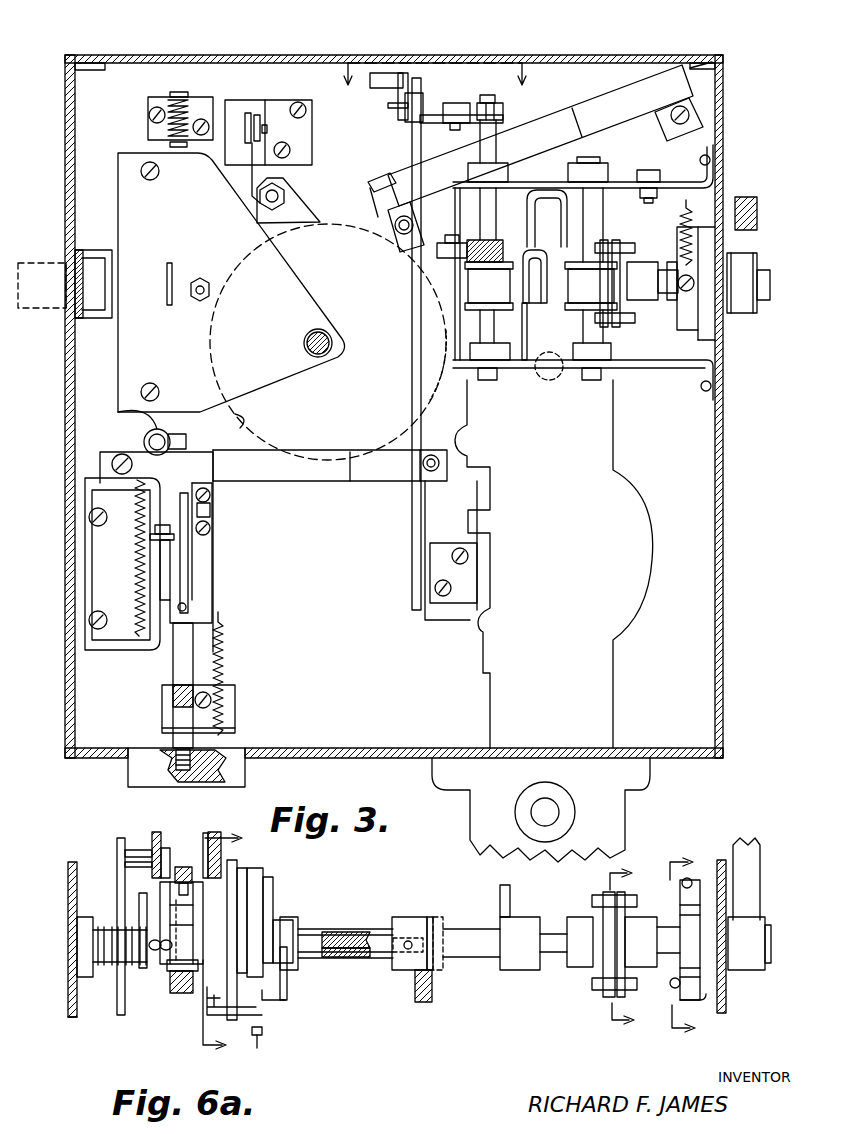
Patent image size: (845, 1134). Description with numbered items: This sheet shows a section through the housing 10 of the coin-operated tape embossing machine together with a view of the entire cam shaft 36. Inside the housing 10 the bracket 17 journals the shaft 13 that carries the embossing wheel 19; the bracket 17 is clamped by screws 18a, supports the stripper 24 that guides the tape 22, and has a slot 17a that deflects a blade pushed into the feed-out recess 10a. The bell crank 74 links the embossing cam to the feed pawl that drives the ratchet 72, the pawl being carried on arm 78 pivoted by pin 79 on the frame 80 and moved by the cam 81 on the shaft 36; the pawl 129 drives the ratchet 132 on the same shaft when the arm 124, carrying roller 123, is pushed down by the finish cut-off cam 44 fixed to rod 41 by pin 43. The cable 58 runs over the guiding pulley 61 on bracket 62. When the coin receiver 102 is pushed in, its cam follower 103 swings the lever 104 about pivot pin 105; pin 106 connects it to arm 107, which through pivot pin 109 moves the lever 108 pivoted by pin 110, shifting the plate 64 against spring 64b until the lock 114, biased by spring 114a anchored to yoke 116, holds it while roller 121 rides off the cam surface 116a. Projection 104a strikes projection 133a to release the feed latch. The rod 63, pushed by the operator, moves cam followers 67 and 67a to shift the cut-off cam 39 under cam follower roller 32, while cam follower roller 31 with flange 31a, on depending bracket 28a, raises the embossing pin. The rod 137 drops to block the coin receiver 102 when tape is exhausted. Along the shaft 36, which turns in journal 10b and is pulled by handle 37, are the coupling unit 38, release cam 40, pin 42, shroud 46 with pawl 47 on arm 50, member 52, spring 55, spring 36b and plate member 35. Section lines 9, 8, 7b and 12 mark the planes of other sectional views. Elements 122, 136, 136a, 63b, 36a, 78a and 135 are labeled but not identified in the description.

In FIG. 3, the housing 10 is at (70, 604).
In FIG. 6A, the housing 10 is at (68, 892).
In FIG. 3, the tape 22 is at (40, 310).
In FIG. 3, the stripper 24 is at (80, 320).
In FIG. 3, the bracket member 17 is at (118, 180).
In FIG. 3, the screws 18a is at (150, 171).
In FIG. 3, the slot 17a is at (191, 288).
In FIG. 3, the shaft 13 is at (332, 336).
In FIG. 3, the embossing wheel 19 is at (333, 240).
In FIG. 3, the bell crank 74 is at (300, 200).
In FIG. 3, the terminal block 122 is at (148, 113).
In FIG. 3, the cable 58 is at (256, 165).
In FIG. 3, the latching mechanism rod 63 is at (176, 92).
In FIG. 6A, the latching mechanism rod 63 is at (186, 994).
In FIG. 3, the bracket 62 is at (283, 108).
In FIG. 3, the guiding pulley 61 is at (248, 113).
In FIG. 3, the lever 104 is at (610, 93).
In FIG. 3, the pivot pin 105 is at (700, 120).
In FIG. 3, the projection 104a is at (376, 182).
In FIG. 3, the pin 106 is at (390, 220).
In FIG. 3, the projection 133a is at (385, 82).
In FIG. 3, the section line 9— 9 is at (432, 85).
In FIG. 3, the arm 124 is at (412, 500).
In FIG. 6A, the arm 124 is at (422, 1004).
In FIG. 3, the pawl 129 is at (486, 98).
In FIG. 3, the ratchet 132 is at (500, 102).
In FIG. 3, the ratchet 72 is at (492, 250).
In FIG. 3, the arm 78 is at (545, 195).
In FIG. 3, the frame 80 is at (623, 181).
In FIG. 3, the pin 79 is at (650, 204).
In FIG. 3, the rod 137 is at (537, 300).
In FIG. 3, the cam follower 103 is at (560, 378).
In FIG. 3, the coupling unit 38 is at (645, 298).
In FIG. 6A, the coupling unit 38 is at (580, 970).
In FIG. 3, the bracket 136 is at (695, 308).
In FIG. 6A, the bracket 136 is at (692, 895).
In FIG. 3, the spring 136a is at (692, 225).
In FIG. 3, the actuating handle 37 is at (745, 240).
In FIG. 6A, the actuating handle 37 is at (752, 902).
In FIG. 3, the shaft 36 is at (770, 285).
In FIG. 6A, the shaft 36 is at (318, 930).
In FIG. 3, the arm 107 is at (470, 412).
In FIG. 3, the pivot pin 109 is at (445, 460).
In FIG. 3, the lever 108 is at (280, 482).
In FIG. 3, the coin receiver 102 is at (640, 532).
In FIG. 3, the pin 110 is at (100, 468).
In FIG. 3, the lock 114 is at (145, 438).
In FIG. 3, the yoke 116 is at (140, 650).
In FIG. 3, the spring 114a is at (135, 562).
In FIG. 3, the roller 121 is at (158, 580).
In FIG. 3, the cam surface 116a is at (180, 585).
In FIG. 3, the plate 64 is at (212, 556).
In FIG. 3, the spring 64b is at (224, 662).
In FIG. 3, the block 63b is at (128, 772).
In FIG. 6A, the journal 10b is at (85, 950).
In FIG. 6A, the recess 10a is at (72, 1000).
In FIG. 6A, the spring 36a is at (100, 966).
In FIG. 6A, the plate member 35 is at (118, 880).
In FIG. 6A, the release cam 40 is at (139, 906).
In FIG. 6A, the pin 42 is at (150, 958).
In FIG. 6A, the cam follower roller 32 is at (157, 838).
In FIG. 6A, the flange 31a is at (168, 850).
In FIG. 6A, the cam follower 67a is at (185, 868).
In FIG. 6A, the cam follower 67 is at (168, 985).
In FIG. 6A, the cut-off cam 39 is at (165, 975).
In FIG. 6A, the cam follower roller 31 is at (206, 833).
In FIG. 6A, the depending bracket 28a is at (216, 845).
In FIG. 6A, the section line 12— 12 is at (233, 945).
In FIG. 6A, the shroud 46 is at (237, 872).
In FIG. 6A, the pawl 47 is at (247, 888).
In FIG. 6A, the arm 50 is at (262, 902).
In FIG. 6A, the member 52 is at (290, 983).
In FIG. 6A, the spring 36b is at (278, 1005).
In FIG. 6A, the spring 55 is at (262, 1033).
In FIG. 6A, the rod 41 is at (352, 940).
In FIG. 6A, the finish cut-off cam 44 is at (410, 972).
In FIG. 6A, the pin 43 is at (410, 940).
In FIG. 6A, the roller 123 is at (433, 985).
In FIG. 6A, the tab 78a is at (508, 900).
In FIG. 6A, the cam 81 is at (522, 972).
In FIG. 6A, the section line 8— 8 is at (629, 949).
In FIG. 6A, the section line 7b— 7b is at (691, 948).
In FIG. 6A, the flange 135 is at (693, 987).